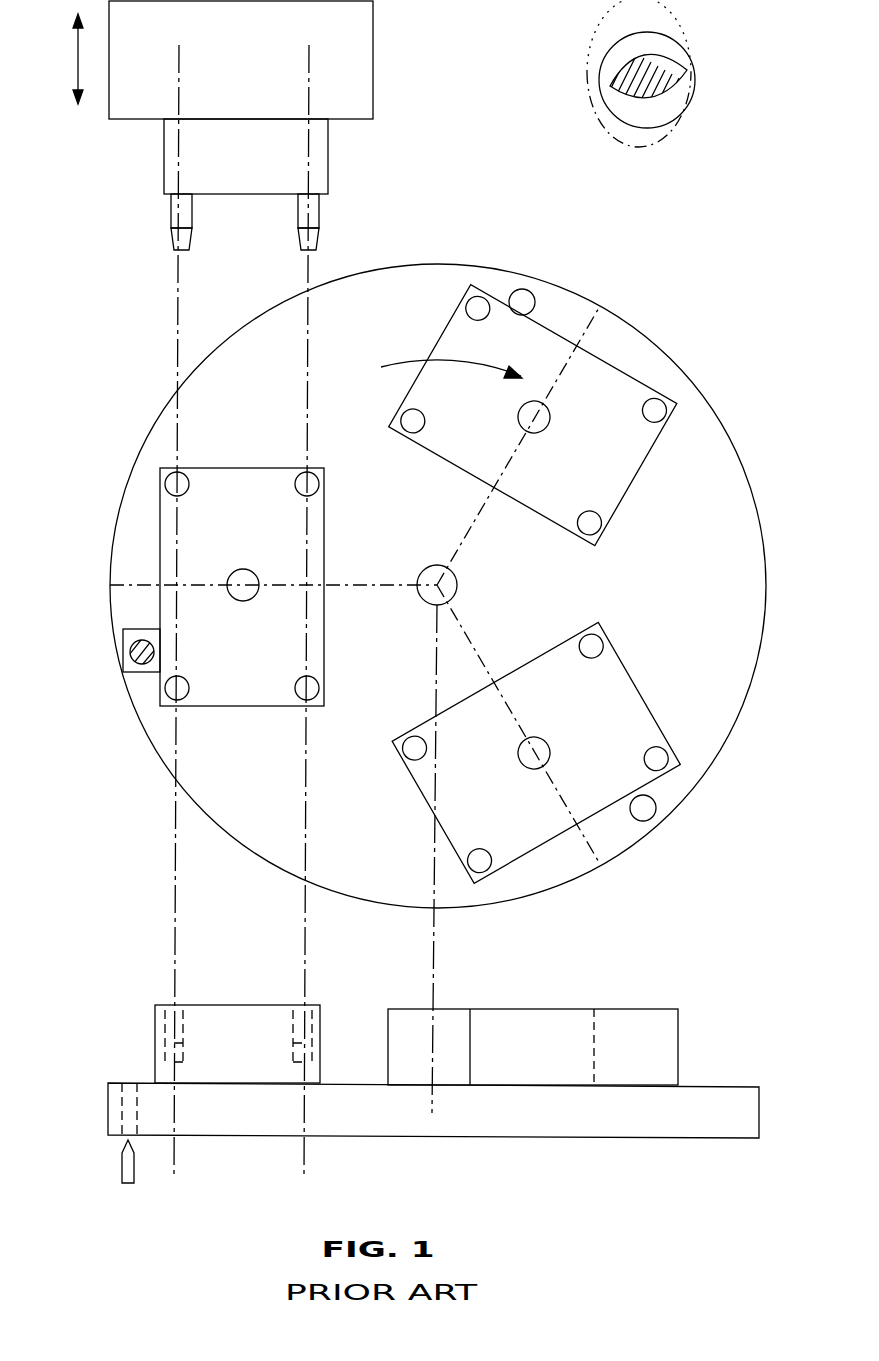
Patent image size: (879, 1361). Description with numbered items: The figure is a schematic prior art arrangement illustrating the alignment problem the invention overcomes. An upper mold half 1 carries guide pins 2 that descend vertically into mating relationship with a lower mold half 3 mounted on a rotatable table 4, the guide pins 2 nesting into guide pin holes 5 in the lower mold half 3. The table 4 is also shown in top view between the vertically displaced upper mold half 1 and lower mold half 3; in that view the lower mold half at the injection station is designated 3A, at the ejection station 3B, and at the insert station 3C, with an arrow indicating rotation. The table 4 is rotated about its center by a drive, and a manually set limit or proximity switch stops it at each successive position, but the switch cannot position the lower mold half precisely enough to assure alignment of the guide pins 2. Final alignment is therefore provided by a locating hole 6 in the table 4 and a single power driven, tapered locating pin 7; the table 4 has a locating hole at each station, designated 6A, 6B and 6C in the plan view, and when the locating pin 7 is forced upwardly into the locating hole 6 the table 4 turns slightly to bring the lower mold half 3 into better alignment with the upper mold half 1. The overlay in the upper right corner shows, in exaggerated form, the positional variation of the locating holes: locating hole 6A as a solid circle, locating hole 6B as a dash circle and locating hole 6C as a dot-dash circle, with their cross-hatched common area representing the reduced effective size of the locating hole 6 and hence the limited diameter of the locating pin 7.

The upper mold half 1 is at (375, 55).
The guide pins 2 is at (322, 220).
The lower mold half 3 is at (220, 1003).
The lower mold half at injection station 3A is at (158, 527).
The lower mold half at ejection station 3B is at (610, 368).
The lower mold half at insert station 3C is at (638, 697).
The rotatable table 4 is at (708, 407).
The guide pin holes 5 is at (152, 1012).
The locating hole 6 is at (113, 1113).
The locating hole at injection station 6A is at (127, 660).
The locating hole at ejection station 6B is at (528, 295).
The locating hole at insert station 6C is at (650, 822).
The locating pin 7 is at (122, 1170).